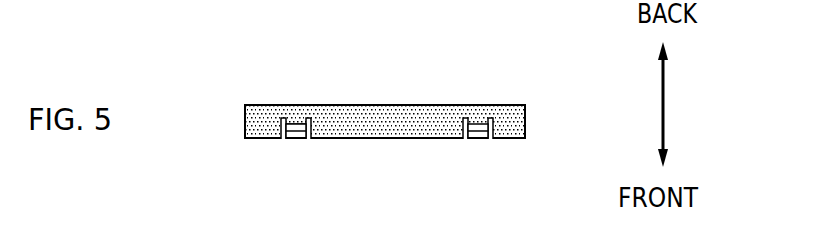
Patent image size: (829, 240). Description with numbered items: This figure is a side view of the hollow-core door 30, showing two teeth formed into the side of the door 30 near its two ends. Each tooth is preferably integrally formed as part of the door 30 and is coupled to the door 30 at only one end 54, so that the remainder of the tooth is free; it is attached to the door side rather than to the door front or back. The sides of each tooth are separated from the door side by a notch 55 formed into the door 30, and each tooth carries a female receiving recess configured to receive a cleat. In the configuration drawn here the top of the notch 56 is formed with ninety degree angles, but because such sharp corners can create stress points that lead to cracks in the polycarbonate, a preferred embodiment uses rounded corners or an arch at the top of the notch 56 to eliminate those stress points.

The hollow-core door 30 is at (394, 130).
The end 54 is at (294, 122).
The notch 55 is at (279, 129).
The top of the notch 56 is at (284, 121).